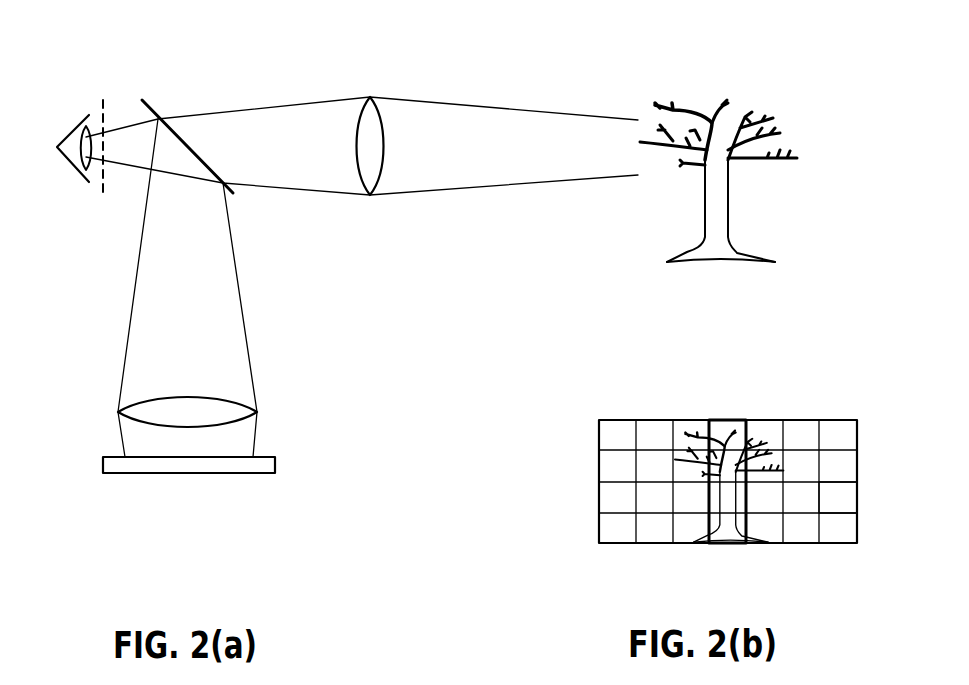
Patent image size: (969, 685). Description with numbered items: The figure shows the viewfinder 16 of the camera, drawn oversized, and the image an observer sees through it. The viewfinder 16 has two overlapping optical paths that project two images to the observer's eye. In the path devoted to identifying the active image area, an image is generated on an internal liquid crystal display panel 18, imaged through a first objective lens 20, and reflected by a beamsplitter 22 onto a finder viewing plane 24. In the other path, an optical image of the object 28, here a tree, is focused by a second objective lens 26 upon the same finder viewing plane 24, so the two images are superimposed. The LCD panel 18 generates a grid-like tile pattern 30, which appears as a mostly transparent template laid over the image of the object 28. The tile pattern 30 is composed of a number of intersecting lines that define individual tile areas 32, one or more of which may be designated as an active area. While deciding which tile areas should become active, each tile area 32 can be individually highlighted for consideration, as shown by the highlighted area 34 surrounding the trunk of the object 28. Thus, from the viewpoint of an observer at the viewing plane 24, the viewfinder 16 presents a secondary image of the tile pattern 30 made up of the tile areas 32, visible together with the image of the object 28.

In FIG. 2A, the viewfinder 16 is at (123, 210).
In FIG. 2A, the liquid crystal display panel 18 is at (222, 473).
In FIG. 2A, the first objective lens 20 is at (223, 412).
In FIG. 2A, the beamsplitter 22 is at (156, 110).
In FIG. 2A, the finder viewing plane 24 is at (118, 112).
In FIG. 2A, the second objective lens 26 is at (372, 175).
In FIG. 2A, the object 28 is at (740, 195).
In FIG. 2B, the tile pattern 30 is at (753, 420).
In FIG. 2B, the tile area 32 is at (837, 492).
In FIG. 2B, the highlighted area 34 is at (725, 545).